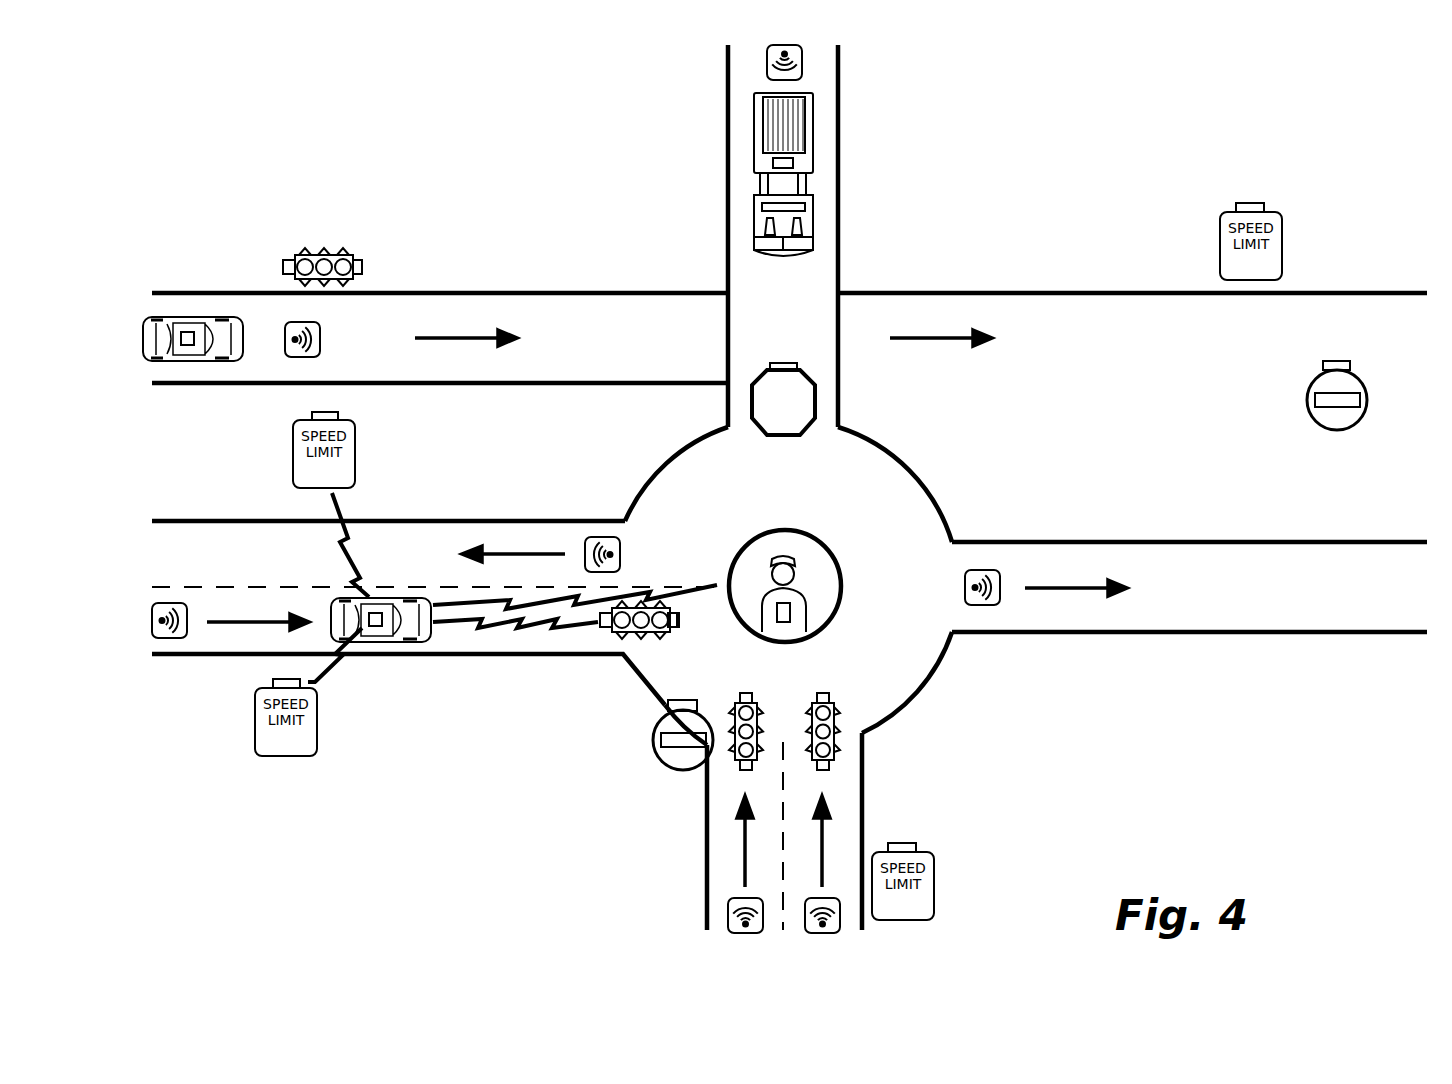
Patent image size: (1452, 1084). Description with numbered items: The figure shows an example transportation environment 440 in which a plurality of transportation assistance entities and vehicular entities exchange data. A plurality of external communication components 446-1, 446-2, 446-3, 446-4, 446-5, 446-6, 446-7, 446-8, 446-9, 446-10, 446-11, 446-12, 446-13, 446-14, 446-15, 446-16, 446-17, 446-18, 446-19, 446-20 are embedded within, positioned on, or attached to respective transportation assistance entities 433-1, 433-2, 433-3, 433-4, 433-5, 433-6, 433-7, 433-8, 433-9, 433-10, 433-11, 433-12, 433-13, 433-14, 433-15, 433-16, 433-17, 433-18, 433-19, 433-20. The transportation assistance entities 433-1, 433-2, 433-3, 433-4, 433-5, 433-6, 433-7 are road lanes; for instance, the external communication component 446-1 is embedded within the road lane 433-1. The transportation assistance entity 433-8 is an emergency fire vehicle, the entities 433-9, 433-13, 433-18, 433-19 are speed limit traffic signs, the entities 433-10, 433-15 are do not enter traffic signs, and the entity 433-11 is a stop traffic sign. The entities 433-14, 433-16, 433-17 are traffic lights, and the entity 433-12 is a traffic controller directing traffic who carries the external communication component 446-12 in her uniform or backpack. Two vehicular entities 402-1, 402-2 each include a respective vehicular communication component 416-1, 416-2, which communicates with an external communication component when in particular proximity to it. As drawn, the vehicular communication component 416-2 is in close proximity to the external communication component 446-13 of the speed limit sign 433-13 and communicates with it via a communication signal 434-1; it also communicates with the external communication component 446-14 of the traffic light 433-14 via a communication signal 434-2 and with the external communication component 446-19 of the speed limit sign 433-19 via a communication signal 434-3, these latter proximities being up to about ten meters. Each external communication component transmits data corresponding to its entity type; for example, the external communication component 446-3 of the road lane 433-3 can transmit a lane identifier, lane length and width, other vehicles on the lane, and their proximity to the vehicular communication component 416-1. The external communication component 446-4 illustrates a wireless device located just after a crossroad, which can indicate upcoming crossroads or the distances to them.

The transportation environment 440 is at (250, 138).
The vehicular entity 402-1 is at (192, 316).
The vehicular entity 402-2 is at (410, 598).
The vehicular communication component 416-1 is at (187, 346).
The vehicular communication component 416-2 is at (370, 618).
The transportation assistance entity 433-1 is at (727, 208).
The transportation assistance entity 433-2 is at (1065, 636).
The transportation assistance entity 433-3 is at (490, 386).
The transportation assistance entity 433-4 is at (473, 519).
The transportation assistance entity 433-5 is at (437, 658).
The transportation assistance entity 433-6 is at (865, 820).
The transportation assistance entity 433-7 is at (705, 865).
The transportation assistance entity 433-8 is at (810, 218).
The transportation assistance entity 433-9 is at (1226, 264).
The transportation assistance entity 433-10 is at (1330, 420).
The transportation assistance entity 433-11 is at (752, 404).
The transportation assistance entity 433-12 is at (800, 578).
The transportation assistance entity 433-13 is at (300, 472).
The transportation assistance entity 433-14 is at (650, 640).
The transportation assistance entity 433-15 is at (672, 758).
The transportation assistance entity 433-16 is at (737, 758).
The transportation assistance entity 433-17 is at (835, 758).
The transportation assistance entity 433-18 is at (925, 904).
The transportation assistance entity 433-19 is at (263, 736).
The transportation assistance entity 433-20 is at (325, 248).
The communication signal 434-1 is at (346, 505).
The communication signal 434-2 is at (547, 628).
The communication signal 434-3 is at (330, 652).
The external communication component 446-1 is at (766, 59).
The external communication component 446-2 is at (982, 569).
The external communication component 446-3 is at (321, 336).
The external communication component 446-4 is at (607, 536).
The external communication component 446-5 is at (169, 638).
The external communication component 446-6 is at (822, 926).
The external communication component 446-7 is at (745, 926).
The external communication component 446-8 is at (772, 165).
The external communication component 446-9 is at (1251, 205).
The external communication component 446-10 is at (1337, 361).
The external communication component 446-11 is at (779, 365).
The external communication component 446-12 is at (790, 612).
The external communication component 446-13 is at (338, 415).
The external communication component 446-14 is at (678, 612).
The external communication component 446-15 is at (670, 702).
The external communication component 446-16 is at (746, 693).
The external communication component 446-17 is at (850, 676).
The external communication component 446-18 is at (916, 848).
The external communication component 446-19 is at (300, 683).
The external communication component 446-20 is at (362, 267).